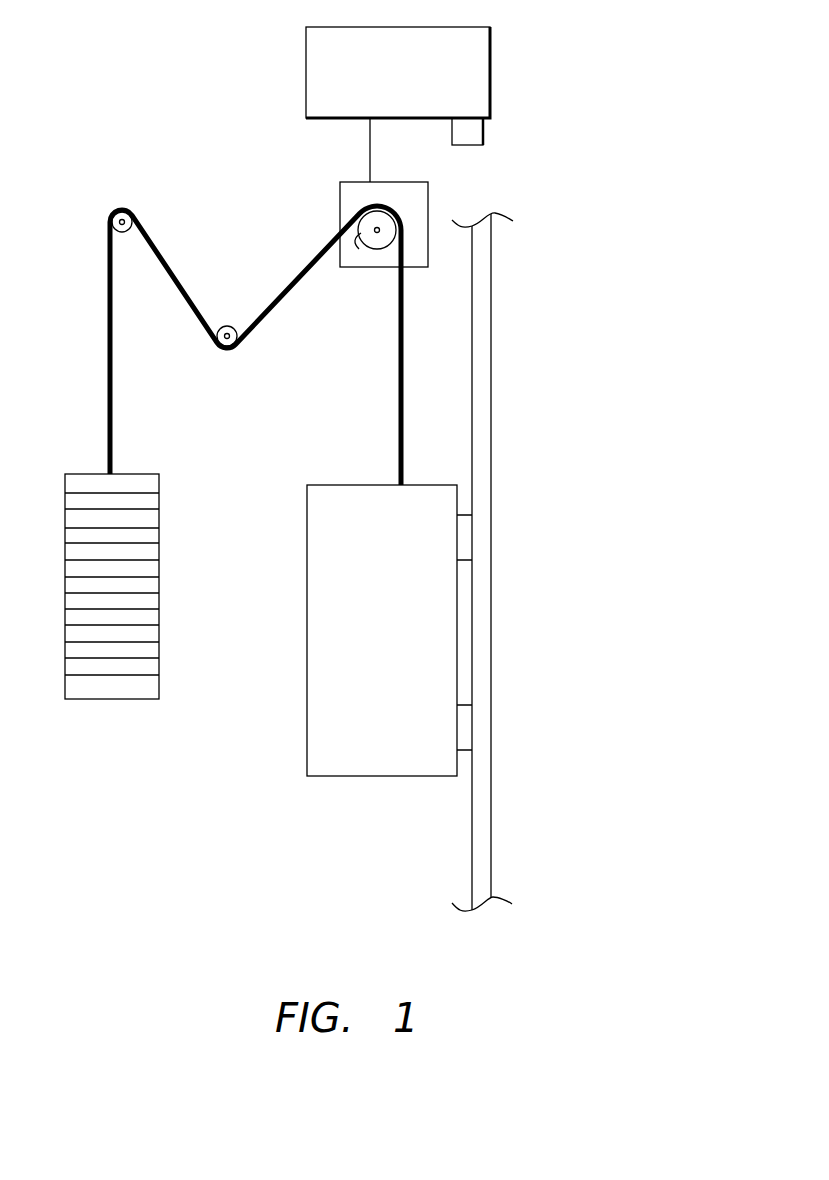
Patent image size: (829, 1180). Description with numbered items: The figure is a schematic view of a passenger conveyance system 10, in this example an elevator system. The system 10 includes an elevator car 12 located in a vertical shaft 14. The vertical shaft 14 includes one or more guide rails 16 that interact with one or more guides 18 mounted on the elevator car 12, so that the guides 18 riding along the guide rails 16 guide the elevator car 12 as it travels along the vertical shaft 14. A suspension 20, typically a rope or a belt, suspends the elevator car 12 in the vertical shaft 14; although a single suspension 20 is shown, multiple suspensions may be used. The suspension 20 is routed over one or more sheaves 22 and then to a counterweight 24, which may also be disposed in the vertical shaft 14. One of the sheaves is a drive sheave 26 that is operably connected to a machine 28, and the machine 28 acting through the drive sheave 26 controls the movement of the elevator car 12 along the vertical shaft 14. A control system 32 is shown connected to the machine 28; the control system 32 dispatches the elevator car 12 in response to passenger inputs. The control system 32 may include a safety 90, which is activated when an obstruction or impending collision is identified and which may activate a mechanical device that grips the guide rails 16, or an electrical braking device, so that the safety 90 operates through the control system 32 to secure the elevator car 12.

The passenger conveyance system 10 is at (565, 291).
The elevator car 12 is at (396, 638).
The vertical shaft 14 is at (249, 697).
The guide rails 16 is at (487, 355).
The guides 18 is at (463, 722).
The suspension 20 is at (108, 338).
The sheaves 22 is at (134, 226).
The counterweight 24 is at (160, 567).
The drive sheave 26 is at (380, 246).
The machine 28 is at (400, 198).
The control system 32 is at (476, 67).
The safety 90 is at (466, 136).